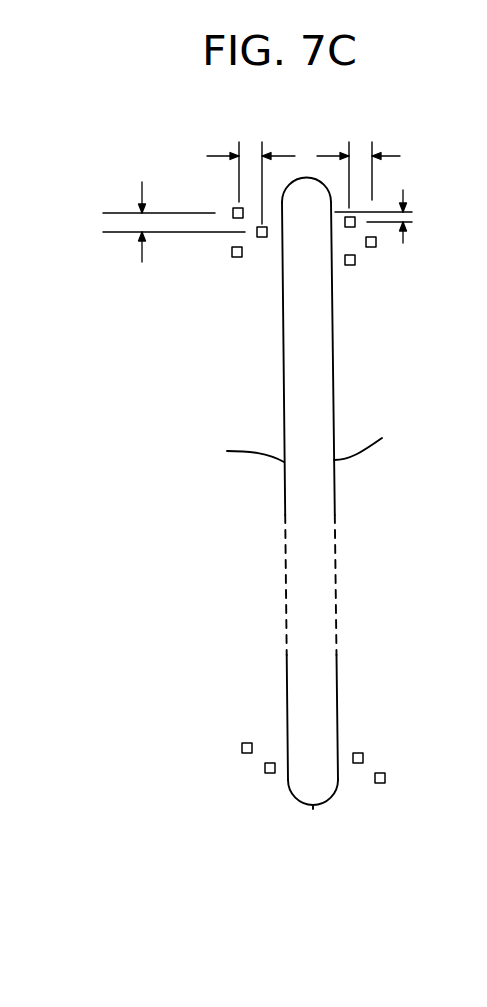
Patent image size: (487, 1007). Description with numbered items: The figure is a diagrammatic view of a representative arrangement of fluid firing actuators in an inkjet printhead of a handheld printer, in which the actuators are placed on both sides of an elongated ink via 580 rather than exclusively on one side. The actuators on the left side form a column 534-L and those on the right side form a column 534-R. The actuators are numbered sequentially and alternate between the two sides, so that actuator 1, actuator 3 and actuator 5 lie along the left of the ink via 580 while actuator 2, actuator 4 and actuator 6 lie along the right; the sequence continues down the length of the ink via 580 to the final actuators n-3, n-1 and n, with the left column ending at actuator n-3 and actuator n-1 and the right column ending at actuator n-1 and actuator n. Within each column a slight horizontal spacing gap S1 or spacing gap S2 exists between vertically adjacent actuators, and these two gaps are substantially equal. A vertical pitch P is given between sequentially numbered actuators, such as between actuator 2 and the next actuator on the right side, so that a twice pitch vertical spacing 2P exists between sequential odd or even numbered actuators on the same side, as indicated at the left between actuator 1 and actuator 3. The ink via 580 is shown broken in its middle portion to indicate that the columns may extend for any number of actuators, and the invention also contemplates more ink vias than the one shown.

The ink via 580 is at (318, 395).
The spacing gap S1 is at (247, 140).
The spacing gap S2 is at (358, 140).
The twice pitch vertical spacing 2P is at (98, 222).
The pitch P is at (422, 218).
The actuator 1 is at (233, 212).
The actuator 2 is at (355, 219).
The actuator 3 is at (262, 237).
The actuator 4 is at (371, 247).
The actuator 5 is at (232, 252).
The actuator 6 is at (350, 265).
The actuator n-3 is at (242, 748).
The actuator n-1 is at (265, 768).
The actuator n is at (385, 778).
The column 534-L is at (247, 792).
The column 534-R is at (390, 794).